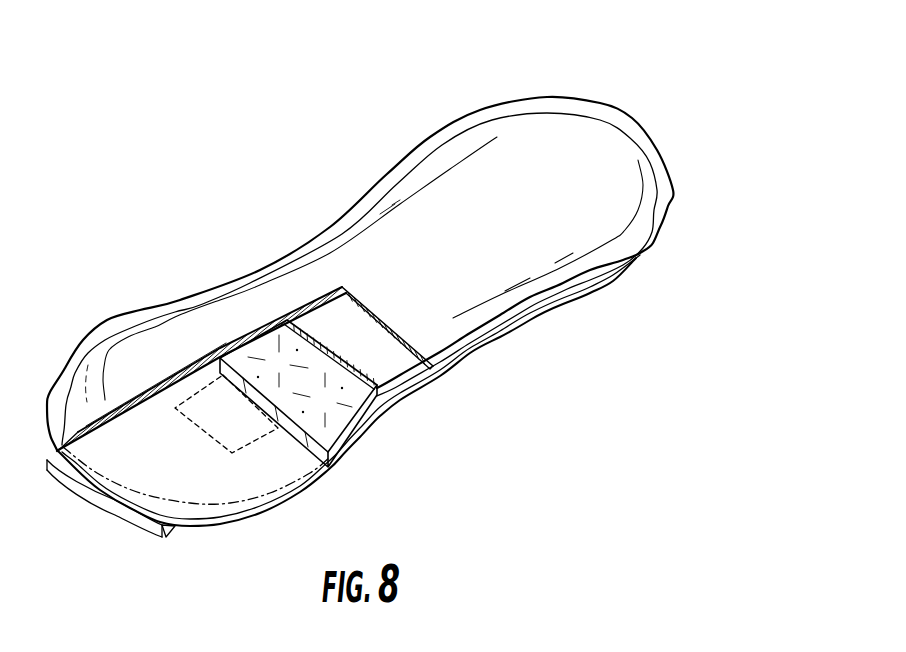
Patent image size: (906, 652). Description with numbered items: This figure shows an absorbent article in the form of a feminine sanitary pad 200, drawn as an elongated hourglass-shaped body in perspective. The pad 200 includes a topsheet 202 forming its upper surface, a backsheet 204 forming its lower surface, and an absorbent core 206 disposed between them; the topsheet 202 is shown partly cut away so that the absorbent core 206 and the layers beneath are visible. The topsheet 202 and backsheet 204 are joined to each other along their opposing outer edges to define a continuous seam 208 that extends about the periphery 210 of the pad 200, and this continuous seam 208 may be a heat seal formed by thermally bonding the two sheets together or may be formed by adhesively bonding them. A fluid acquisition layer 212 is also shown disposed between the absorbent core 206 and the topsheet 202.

The pad 200 is at (612, 403).
The topsheet 202 is at (603, 145).
The backsheet 204 is at (205, 528).
The absorbent core 206 is at (340, 413).
The continuous seam 208 is at (662, 225).
The periphery 210 is at (430, 137).
The fluid acquisition layer 212 is at (387, 363).